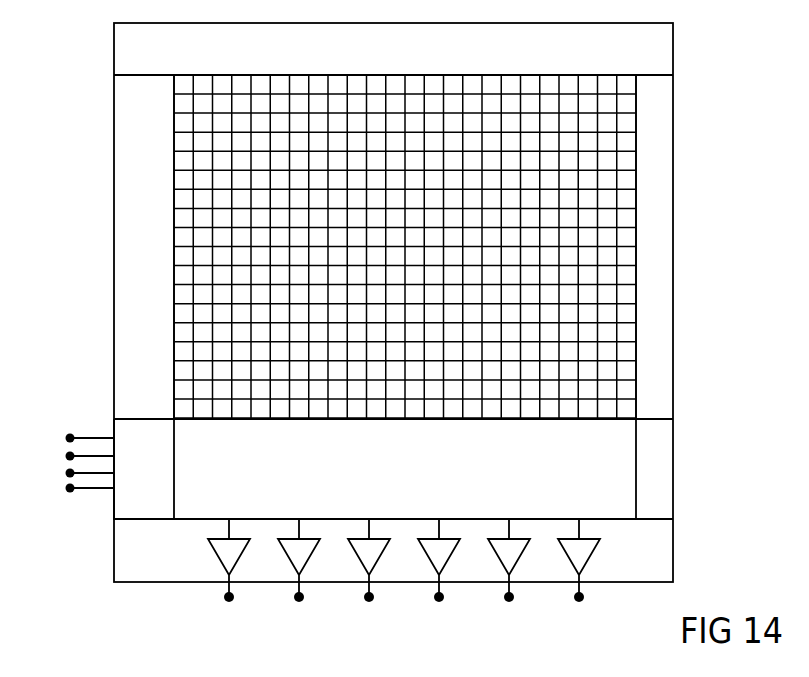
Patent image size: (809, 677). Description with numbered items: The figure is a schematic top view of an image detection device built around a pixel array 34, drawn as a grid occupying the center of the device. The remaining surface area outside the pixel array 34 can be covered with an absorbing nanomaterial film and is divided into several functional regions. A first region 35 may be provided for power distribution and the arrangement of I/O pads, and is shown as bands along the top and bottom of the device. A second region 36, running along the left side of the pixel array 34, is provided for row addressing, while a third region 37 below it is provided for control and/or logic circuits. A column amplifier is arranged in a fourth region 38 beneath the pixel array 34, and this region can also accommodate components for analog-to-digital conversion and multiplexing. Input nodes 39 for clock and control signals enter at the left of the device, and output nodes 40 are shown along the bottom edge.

The pixel array 34 is at (628, 242).
The first region 35 is at (618, 51).
The second region 36 is at (140, 229).
The third region 37 is at (152, 445).
The fourth region 38 is at (607, 442).
The input nodes 39 is at (82, 490).
The output nodes 40 is at (225, 597).